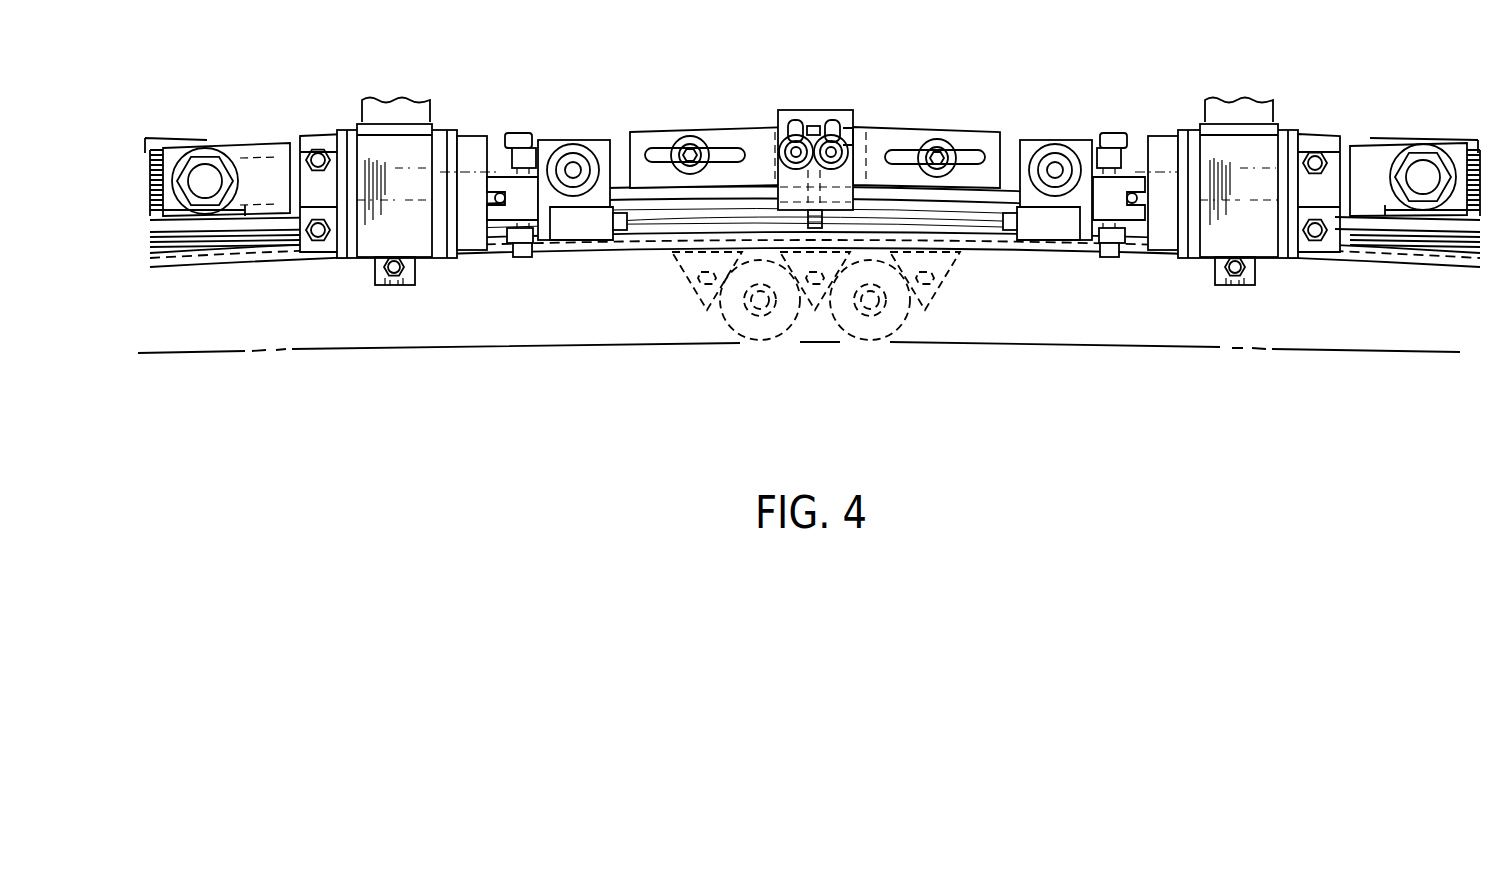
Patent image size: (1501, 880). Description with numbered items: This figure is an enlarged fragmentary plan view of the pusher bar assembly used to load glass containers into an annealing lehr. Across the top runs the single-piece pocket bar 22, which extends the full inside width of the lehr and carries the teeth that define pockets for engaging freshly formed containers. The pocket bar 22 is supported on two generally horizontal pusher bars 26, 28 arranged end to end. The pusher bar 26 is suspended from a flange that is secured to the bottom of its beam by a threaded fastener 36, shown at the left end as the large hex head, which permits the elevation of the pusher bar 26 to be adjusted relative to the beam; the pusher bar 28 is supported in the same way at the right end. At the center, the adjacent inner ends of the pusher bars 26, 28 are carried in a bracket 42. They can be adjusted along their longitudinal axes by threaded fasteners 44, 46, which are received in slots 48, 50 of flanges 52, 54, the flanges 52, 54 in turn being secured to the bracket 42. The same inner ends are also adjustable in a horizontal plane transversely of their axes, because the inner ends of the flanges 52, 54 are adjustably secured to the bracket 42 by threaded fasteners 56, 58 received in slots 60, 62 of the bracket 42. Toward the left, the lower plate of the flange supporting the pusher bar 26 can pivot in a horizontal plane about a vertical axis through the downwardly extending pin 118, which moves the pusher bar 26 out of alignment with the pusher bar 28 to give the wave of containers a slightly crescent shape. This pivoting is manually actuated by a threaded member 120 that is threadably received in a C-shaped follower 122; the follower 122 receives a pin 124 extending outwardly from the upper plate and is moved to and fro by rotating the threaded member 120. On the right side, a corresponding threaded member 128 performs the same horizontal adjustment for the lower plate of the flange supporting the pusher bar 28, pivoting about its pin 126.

The pocket bar 22 is at (620, 247).
The pusher bar 26 is at (147, 148).
The pusher bar 28 is at (1473, 160).
The threaded fastener 36 is at (212, 177).
The bracket 42 is at (825, 113).
The threaded fastener 44 is at (688, 148).
The threaded fastener 46 is at (915, 138).
The slot 48 is at (736, 156).
The slot 50 is at (980, 157).
The flange 52 is at (713, 135).
The flange 54 is at (933, 150).
The threaded fastener 56 is at (812, 121).
The threaded fastener 58 is at (855, 130).
The slot 60 is at (795, 125).
The slot 62 is at (838, 123).
The pin 118 is at (396, 150).
The threaded member 120 is at (548, 242).
The C-shaped follower 122 is at (490, 222).
The pin 124 is at (490, 198).
The right clamp 126 is at (1247, 183).
The threaded member 128 is at (1096, 230).